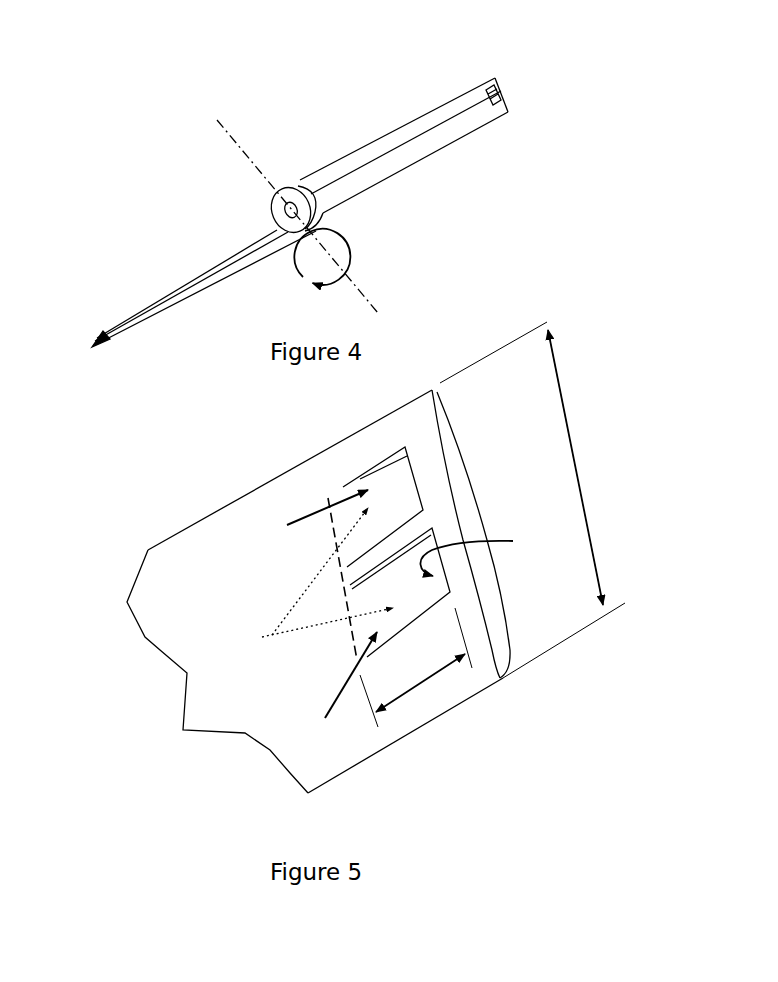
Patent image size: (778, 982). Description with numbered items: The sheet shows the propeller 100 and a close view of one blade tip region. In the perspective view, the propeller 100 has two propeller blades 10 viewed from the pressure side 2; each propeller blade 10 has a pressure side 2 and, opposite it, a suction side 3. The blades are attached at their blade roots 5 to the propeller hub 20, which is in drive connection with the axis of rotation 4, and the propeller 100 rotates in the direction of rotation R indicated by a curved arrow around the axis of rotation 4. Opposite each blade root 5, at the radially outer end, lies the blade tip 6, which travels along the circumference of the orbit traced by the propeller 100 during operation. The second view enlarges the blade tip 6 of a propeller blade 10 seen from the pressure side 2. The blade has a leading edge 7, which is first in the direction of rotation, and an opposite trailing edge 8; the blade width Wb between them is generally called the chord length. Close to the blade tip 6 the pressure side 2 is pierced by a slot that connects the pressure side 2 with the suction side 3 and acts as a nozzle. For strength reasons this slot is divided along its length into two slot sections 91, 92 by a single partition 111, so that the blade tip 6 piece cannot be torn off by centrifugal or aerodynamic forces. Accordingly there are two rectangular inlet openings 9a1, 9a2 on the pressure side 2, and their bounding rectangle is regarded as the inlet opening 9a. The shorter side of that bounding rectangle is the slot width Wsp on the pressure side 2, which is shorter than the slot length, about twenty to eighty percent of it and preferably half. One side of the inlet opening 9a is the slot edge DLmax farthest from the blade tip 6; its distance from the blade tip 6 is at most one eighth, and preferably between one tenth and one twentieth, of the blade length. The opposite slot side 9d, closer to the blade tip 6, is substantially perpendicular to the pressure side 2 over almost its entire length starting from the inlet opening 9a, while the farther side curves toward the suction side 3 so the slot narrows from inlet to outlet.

In FIG. 4, the propeller 100 is at (198, 94).
In FIG. 4, the propeller blade 10 is at (377, 96).
In FIG. 4, the pressure side 2 is at (423, 137).
In FIG. 5, the pressure side 2 is at (200, 575).
In FIG. 4, the blade tip 6 is at (505, 95).
In FIG. 5, the blade tip 6 is at (469, 519).
In FIG. 4, the blade root 5 is at (320, 187).
In FIG. 4, the suction side 3 is at (472, 140).
In FIG. 4, the axis of rotation 4 is at (243, 153).
In FIG. 4, the propeller hub 20 is at (287, 213).
In FIG. 4, the direction of rotation R is at (318, 261).
In FIG. 5, the trailing edge 8 is at (278, 474).
In FIG. 5, the leading edge 7 is at (391, 748).
In FIG. 5, the first slot section 91 is at (413, 477).
In FIG. 5, the second slot section 92 is at (443, 562).
In FIG. 5, the partition 111 is at (409, 533).
In FIG. 5, the slot side closer to the blade tip 9d is at (482, 554).
In FIG. 5, the inlet opening 9a is at (303, 580).
In FIG. 5, the first inlet opening 9a1 is at (306, 519).
In FIG. 5, the second inlet opening 9a2 is at (339, 692).
In FIG. 5, the blade width Wb is at (527, 463).
In FIG. 5, the slot width on the pressure side Wsp is at (416, 667).
In FIG. 5, the slot edge farthest from the blade tip DLmax is at (353, 637).